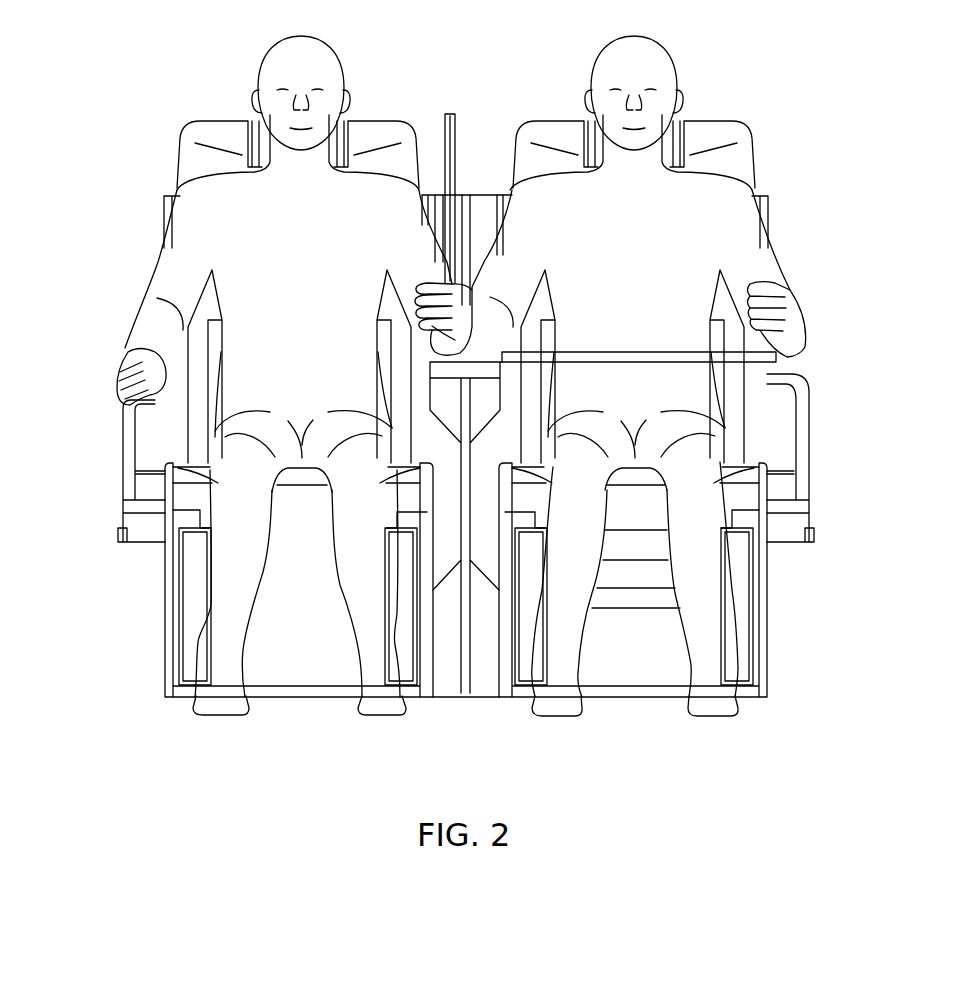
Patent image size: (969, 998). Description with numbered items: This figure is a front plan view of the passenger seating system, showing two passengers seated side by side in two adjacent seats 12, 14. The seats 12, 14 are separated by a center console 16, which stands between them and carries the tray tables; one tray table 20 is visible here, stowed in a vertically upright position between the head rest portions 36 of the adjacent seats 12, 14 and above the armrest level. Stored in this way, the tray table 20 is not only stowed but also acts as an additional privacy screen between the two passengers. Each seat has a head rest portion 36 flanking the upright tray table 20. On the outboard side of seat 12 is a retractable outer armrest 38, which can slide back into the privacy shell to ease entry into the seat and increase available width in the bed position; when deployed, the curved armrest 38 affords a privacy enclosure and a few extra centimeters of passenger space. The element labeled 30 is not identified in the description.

The seat 12 is at (828, 226).
The seat 14 is at (100, 280).
The center console 16 is at (462, 412).
The tray table 20 is at (452, 112).
The tray table 30 is at (432, 323).
The head rest portion 36 is at (378, 134).
The retractable outer armrest 38 is at (785, 456).